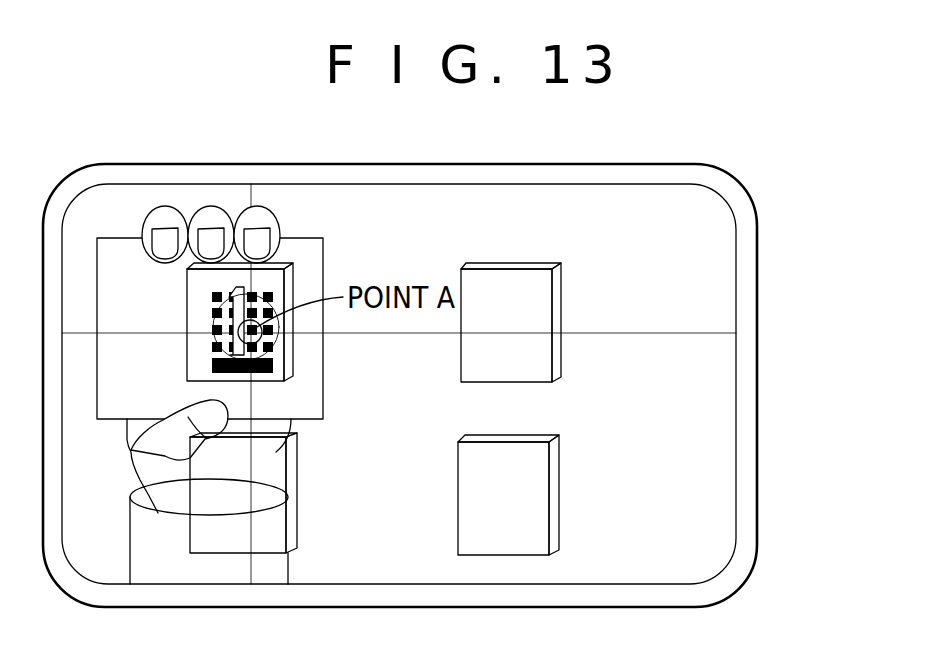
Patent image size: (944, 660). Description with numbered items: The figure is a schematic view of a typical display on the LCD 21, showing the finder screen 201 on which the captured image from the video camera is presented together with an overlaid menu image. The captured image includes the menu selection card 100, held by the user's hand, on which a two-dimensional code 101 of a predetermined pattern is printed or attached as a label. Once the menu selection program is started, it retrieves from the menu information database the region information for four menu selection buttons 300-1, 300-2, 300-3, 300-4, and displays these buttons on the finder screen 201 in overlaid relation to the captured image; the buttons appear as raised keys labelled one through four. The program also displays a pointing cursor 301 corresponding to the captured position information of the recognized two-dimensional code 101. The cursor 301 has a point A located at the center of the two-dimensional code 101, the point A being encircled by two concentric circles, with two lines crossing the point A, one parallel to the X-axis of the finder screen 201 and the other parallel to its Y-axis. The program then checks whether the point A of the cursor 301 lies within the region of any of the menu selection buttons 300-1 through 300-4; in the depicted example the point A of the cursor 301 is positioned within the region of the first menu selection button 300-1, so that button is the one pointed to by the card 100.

The LCD 21 is at (757, 240).
The finder screen 201 is at (736, 395).
The menu selection card 100 is at (323, 238).
The two-dimensional code 101 is at (281, 371).
The menu selection button 300-1 is at (187, 300).
The menu selection button 300-2 is at (562, 278).
The menu selection button 300-3 is at (297, 530).
The menu selection button 300-4 is at (562, 452).
The pointing cursor 301 is at (214, 334).